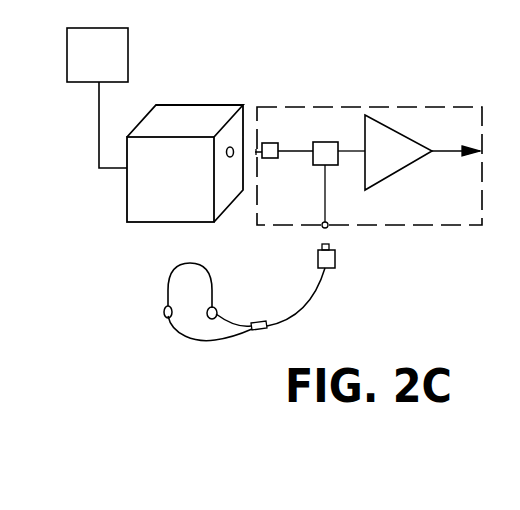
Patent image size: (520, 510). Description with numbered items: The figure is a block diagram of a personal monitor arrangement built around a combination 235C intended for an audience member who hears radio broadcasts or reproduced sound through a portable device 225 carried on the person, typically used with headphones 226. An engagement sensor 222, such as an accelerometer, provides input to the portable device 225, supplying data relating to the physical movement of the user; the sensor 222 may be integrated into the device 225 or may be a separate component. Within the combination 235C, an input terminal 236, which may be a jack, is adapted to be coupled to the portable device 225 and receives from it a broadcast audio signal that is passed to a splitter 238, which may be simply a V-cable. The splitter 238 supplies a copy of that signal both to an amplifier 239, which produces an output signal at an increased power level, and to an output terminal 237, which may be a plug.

The engagement sensor 222 is at (97, 98).
The portable device 225 is at (184, 104).
The headphones 226 is at (213, 280).
The combination 235C is at (408, 228).
The input terminal 236 is at (273, 143).
The output terminal 237 is at (331, 224).
The splitter 238 is at (313, 165).
The amplifier 239 is at (405, 168).